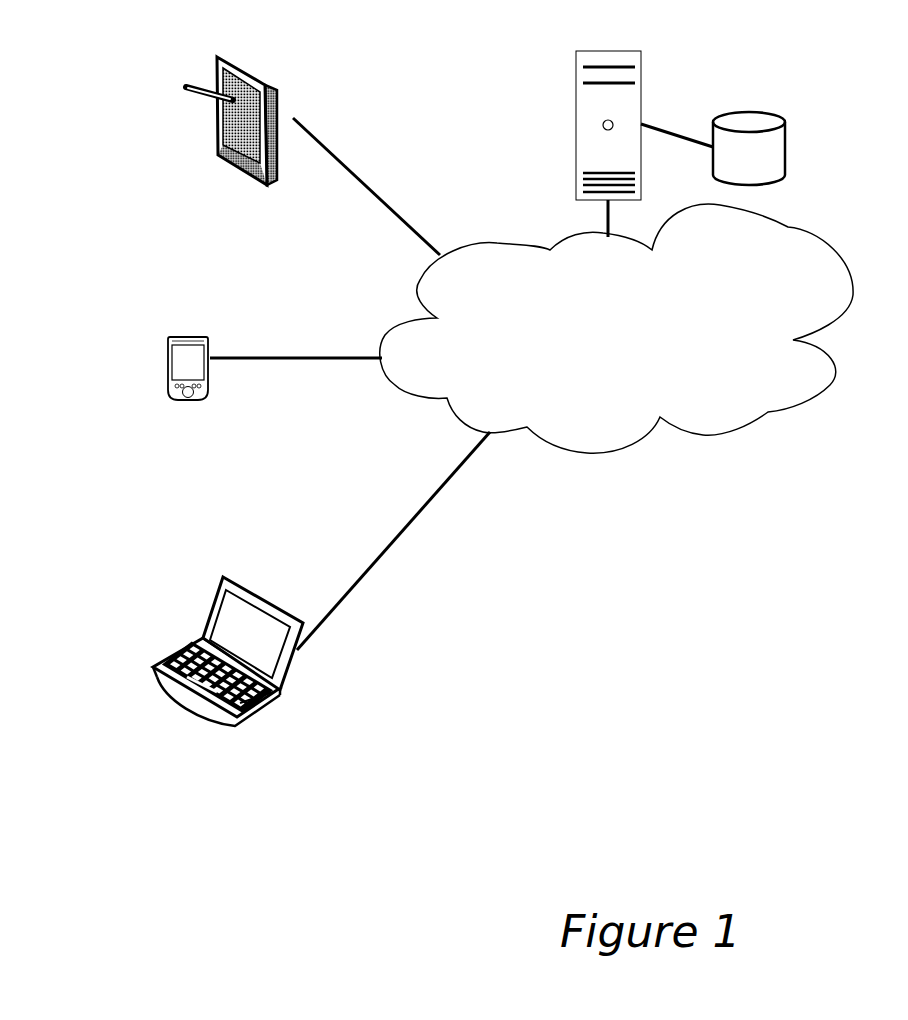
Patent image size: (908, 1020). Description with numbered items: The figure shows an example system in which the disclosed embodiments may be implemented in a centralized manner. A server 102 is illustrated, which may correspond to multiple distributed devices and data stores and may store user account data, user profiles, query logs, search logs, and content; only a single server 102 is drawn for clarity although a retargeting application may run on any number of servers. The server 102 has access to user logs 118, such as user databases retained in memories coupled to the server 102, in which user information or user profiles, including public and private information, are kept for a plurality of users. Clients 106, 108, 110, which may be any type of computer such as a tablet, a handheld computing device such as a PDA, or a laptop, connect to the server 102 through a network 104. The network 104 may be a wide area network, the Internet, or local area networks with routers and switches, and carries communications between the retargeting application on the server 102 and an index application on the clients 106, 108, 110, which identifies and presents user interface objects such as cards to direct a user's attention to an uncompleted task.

The server 102 is at (645, 75).
The network 104 is at (616, 328).
The client 106 is at (179, 101).
The client 108 is at (160, 352).
The client 110 is at (180, 637).
The user logs 118 is at (798, 147).